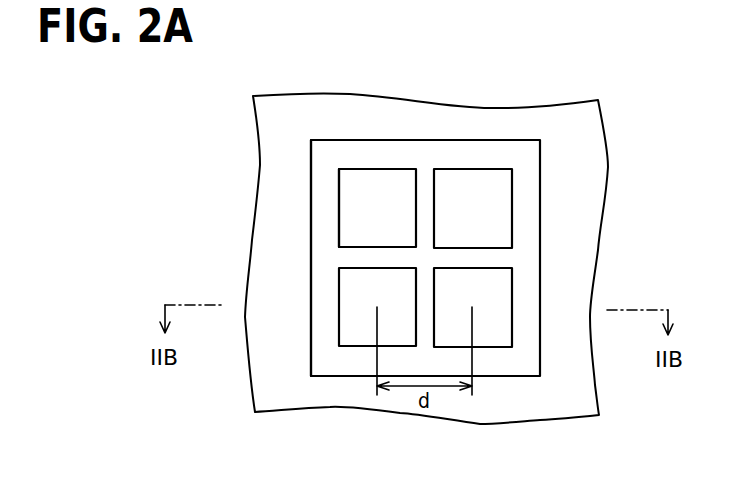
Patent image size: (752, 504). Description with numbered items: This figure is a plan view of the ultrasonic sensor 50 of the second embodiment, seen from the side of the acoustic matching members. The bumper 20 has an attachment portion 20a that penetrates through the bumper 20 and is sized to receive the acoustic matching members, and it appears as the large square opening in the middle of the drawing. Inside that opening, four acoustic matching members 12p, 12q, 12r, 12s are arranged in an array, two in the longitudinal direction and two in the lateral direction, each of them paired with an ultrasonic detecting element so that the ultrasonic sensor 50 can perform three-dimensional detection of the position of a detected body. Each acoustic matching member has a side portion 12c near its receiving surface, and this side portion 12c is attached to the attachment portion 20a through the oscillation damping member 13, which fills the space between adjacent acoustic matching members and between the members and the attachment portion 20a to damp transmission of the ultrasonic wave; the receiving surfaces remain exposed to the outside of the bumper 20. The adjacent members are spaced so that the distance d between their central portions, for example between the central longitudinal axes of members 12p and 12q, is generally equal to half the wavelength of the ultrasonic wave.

The ultrasonic sensor 50 is at (567, 73).
The bumper 20 is at (493, 123).
The attachment portion 20a is at (311, 337).
The oscillation damping member 13 is at (525, 368).
The side portion 12c is at (339, 182).
The acoustic matching member 12r is at (382, 188).
The acoustic matching member 12s is at (450, 182).
The acoustic matching member 12p is at (357, 335).
The acoustic matching member 12q is at (497, 334).